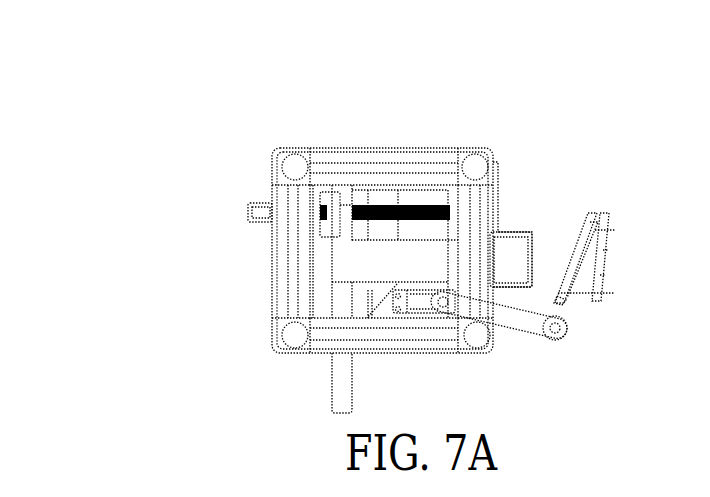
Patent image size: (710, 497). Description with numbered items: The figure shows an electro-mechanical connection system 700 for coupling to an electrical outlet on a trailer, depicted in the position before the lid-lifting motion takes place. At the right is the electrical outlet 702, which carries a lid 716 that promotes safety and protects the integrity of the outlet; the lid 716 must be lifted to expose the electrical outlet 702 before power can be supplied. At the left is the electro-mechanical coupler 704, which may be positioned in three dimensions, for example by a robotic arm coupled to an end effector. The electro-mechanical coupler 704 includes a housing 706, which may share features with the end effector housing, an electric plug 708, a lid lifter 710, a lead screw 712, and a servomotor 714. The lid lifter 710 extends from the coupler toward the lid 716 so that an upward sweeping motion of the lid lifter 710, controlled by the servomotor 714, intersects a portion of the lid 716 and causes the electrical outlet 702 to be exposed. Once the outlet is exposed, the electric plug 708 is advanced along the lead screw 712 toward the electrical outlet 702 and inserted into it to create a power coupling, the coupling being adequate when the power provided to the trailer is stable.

The electro-mechanical connection system 700 is at (326, 84).
The electrical outlet 702 is at (604, 195).
The electro-mechanical coupler 704 is at (467, 128).
The housing 706 is at (360, 150).
The electric plug 708 is at (340, 272).
The lid lifter 710 is at (548, 345).
The lead screw 712 is at (356, 207).
The servomotor 714 is at (420, 307).
The lid 716 is at (560, 303).